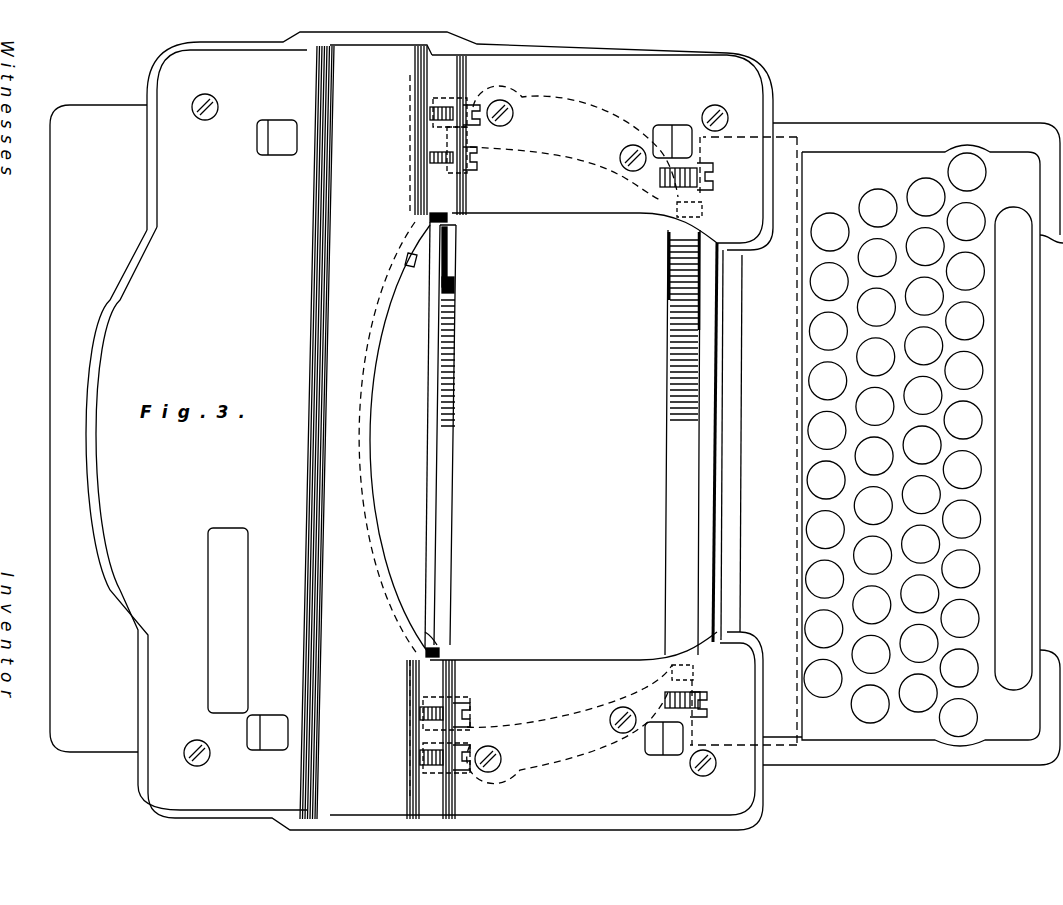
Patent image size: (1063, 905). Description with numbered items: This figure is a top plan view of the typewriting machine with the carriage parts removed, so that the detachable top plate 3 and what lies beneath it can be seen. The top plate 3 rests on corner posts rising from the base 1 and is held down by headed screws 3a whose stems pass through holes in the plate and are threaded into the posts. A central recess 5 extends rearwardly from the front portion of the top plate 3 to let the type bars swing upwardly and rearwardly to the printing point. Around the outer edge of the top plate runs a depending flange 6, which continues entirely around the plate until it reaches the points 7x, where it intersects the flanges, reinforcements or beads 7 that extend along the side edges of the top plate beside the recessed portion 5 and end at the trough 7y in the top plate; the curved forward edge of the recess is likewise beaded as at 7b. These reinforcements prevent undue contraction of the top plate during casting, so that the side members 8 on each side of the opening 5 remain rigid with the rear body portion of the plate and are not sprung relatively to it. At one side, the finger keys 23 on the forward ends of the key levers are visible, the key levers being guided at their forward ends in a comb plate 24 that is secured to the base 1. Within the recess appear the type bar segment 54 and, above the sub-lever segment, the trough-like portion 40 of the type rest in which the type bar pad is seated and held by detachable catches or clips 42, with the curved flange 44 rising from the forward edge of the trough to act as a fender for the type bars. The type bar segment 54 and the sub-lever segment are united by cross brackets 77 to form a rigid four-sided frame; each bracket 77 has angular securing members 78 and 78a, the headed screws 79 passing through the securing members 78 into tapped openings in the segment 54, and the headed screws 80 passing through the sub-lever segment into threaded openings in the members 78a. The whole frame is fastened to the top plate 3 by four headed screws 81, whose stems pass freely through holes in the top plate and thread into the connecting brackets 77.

The base 1 is at (856, 767).
The top plate 3 is at (429, 432).
The headed screws 3a is at (704, 782).
The central recess 5 is at (574, 435).
The depending flange 6 is at (242, 42).
The flanges, reinforcements or beads 7 is at (660, 222).
The bead 7b is at (368, 483).
The points of intersection 7x is at (726, 255).
The trough 7y is at (440, 655).
The side members 8 is at (530, 435).
The finger key 23 is at (842, 224).
The comb plate 24 is at (785, 737).
The trough-like portion 40 is at (667, 366).
The catches or clips 42 is at (676, 212).
The flange 44 is at (716, 232).
The type bar segment 54 is at (436, 436).
The cross brackets 77 is at (572, 435).
The securing members 78 is at (468, 186).
The securing members 78a is at (668, 770).
The headed screws 79 is at (470, 103).
The headed screws 80 is at (708, 172).
The headed screws 81 is at (507, 120).